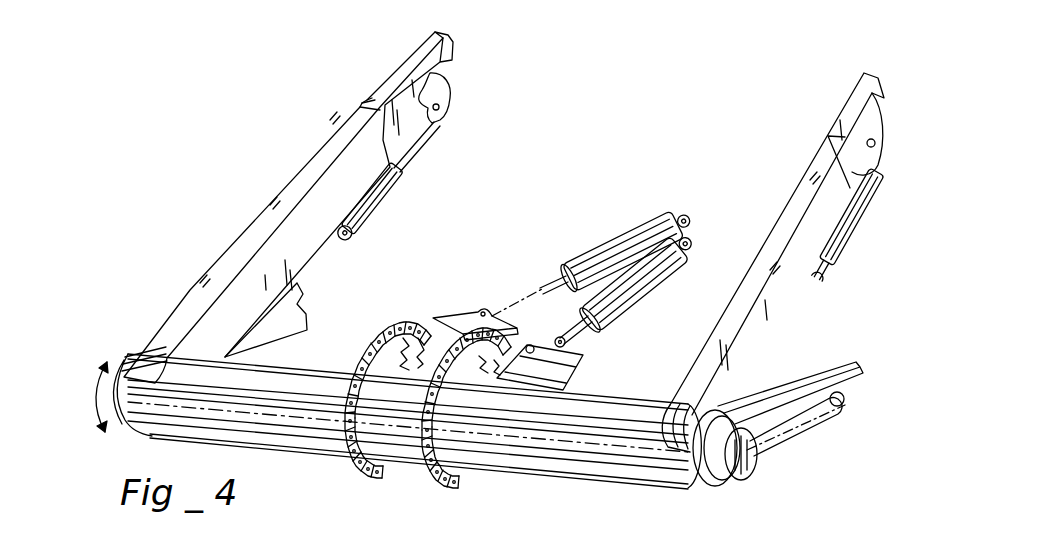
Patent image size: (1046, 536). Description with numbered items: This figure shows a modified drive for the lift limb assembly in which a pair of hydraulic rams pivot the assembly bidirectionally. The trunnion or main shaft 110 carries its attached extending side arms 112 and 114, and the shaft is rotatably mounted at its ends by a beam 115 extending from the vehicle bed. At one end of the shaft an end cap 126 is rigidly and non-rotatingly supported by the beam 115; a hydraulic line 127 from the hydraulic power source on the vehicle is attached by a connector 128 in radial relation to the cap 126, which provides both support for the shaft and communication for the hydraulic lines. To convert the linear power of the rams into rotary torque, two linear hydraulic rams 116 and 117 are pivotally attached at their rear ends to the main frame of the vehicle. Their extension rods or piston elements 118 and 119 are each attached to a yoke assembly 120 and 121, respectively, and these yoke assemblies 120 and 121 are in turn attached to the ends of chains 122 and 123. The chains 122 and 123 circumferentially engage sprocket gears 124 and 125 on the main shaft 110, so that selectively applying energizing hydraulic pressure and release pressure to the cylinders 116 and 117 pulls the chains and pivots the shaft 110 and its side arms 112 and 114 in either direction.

The main shaft 110 is at (577, 463).
The side arm 112 is at (297, 181).
The side arm 114 is at (797, 205).
The beam 115 is at (812, 378).
The hydraulic ram 116 is at (623, 240).
The hydraulic ram 117 is at (647, 288).
The extension rod 118 is at (530, 293).
The extension rod 119 is at (577, 337).
The yoke assembly 120 is at (463, 320).
The yoke assembly 121 is at (563, 362).
The chain 122 is at (393, 350).
The chain 123 is at (487, 473).
The sprocket gear 124 is at (377, 460).
The sprocket gear 125 is at (450, 480).
The end cap 126 is at (730, 476).
The hydraulic line 127 is at (818, 421).
The connector 128 is at (753, 447).